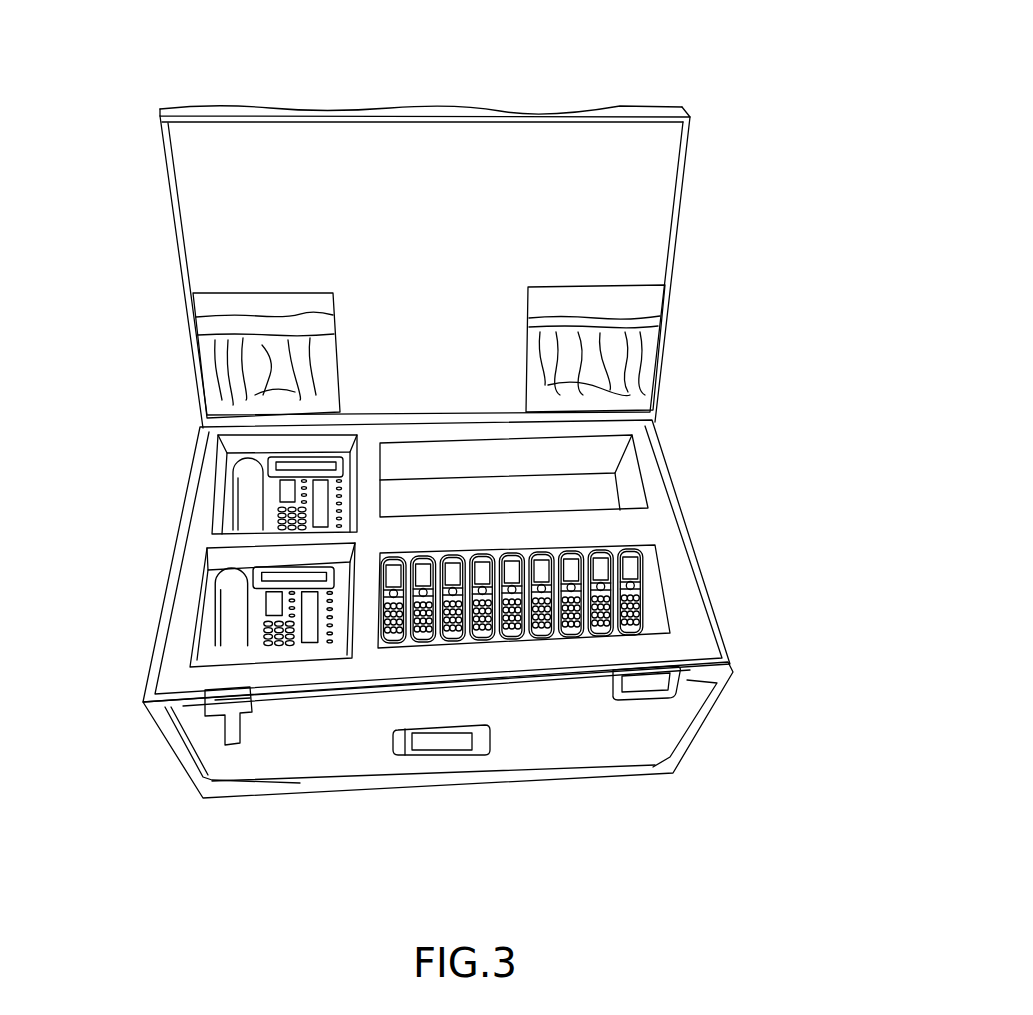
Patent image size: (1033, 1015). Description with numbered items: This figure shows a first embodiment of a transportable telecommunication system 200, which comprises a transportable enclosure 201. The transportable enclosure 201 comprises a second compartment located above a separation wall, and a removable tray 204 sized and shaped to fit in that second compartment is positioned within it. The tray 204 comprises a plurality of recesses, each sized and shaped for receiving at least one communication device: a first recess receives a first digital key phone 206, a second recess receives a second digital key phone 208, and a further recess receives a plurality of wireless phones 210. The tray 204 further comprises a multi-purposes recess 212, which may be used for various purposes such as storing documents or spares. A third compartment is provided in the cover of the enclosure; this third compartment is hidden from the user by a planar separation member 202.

The transportable telecommunication system 200 is at (570, 64).
The transportable enclosure 201 is at (155, 665).
The planar separation member 202 is at (443, 177).
The removable tray 204 is at (207, 470).
The first digital key phone 206 is at (243, 495).
The second digital key phone 208 is at (257, 640).
The wireless phones 210 is at (614, 618).
The multi-purposes recess 212 is at (603, 454).